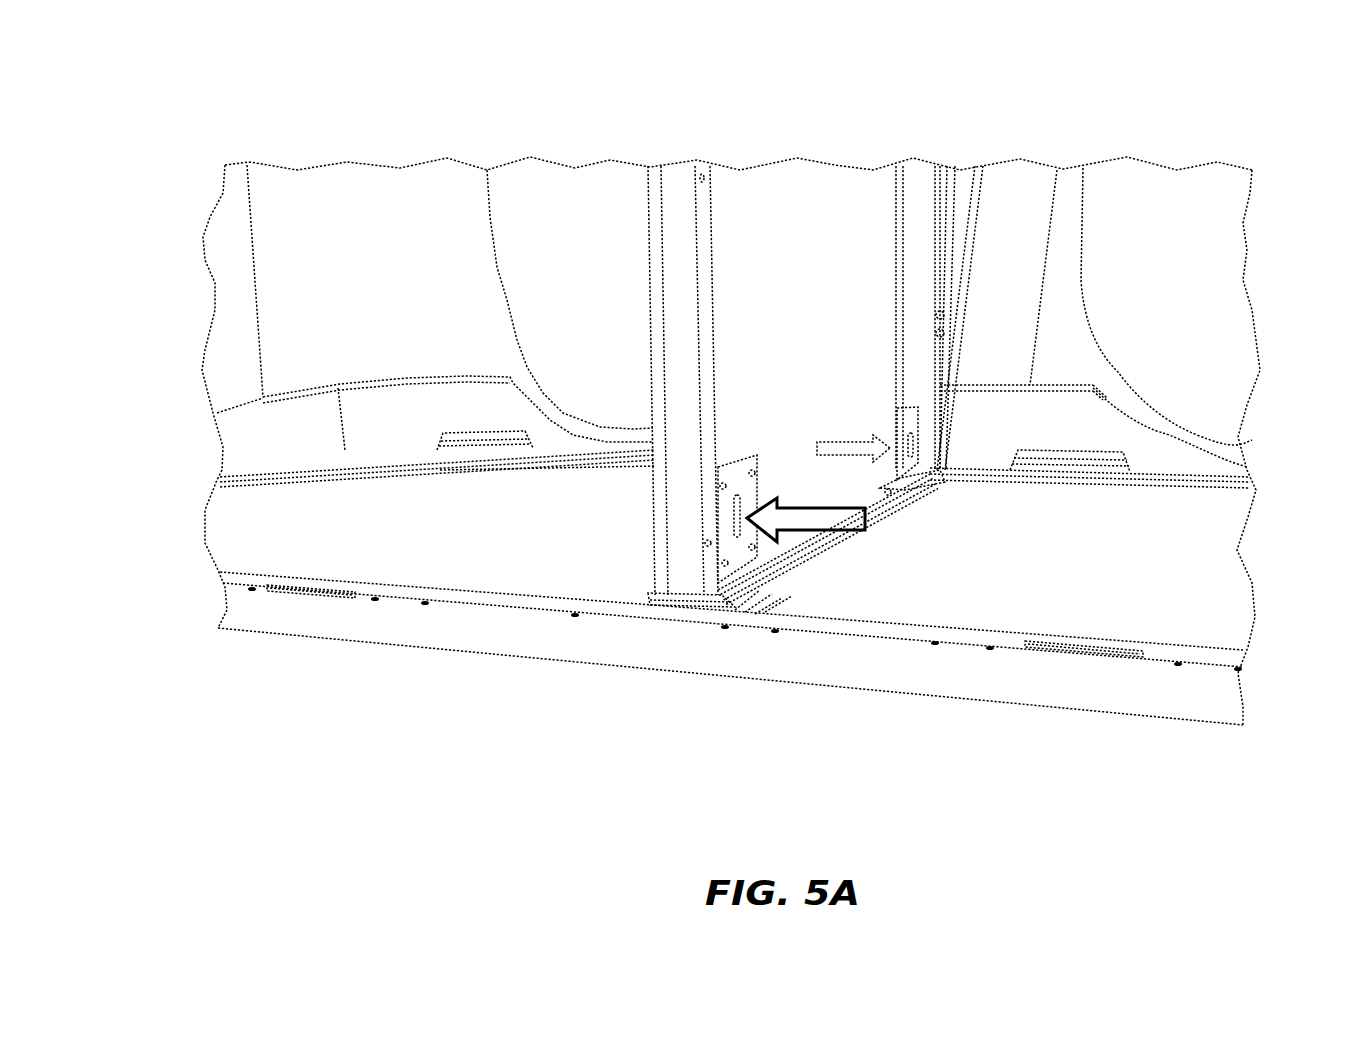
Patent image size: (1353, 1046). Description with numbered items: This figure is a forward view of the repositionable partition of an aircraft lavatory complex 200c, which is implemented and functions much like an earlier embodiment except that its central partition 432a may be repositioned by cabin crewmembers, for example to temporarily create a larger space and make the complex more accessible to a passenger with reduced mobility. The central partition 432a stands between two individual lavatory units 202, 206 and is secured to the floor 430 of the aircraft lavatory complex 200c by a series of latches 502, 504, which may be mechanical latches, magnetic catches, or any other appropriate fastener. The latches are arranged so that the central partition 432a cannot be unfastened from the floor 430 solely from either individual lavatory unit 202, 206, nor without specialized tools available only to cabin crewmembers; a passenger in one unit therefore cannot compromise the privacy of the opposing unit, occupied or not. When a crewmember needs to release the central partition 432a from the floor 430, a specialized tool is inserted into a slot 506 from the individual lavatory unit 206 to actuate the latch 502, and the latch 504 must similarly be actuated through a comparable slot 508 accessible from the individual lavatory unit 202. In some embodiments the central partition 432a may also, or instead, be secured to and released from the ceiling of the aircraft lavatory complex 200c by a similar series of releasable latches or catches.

The aircraft lavatory complex 200c is at (142, 44).
The individual lavatory unit 202 is at (250, 532).
The individual lavatory unit 206 is at (1212, 583).
The floor 430 is at (485, 542).
The central partition 432a is at (682, 218).
The latch 502 is at (740, 585).
The latch 504 is at (912, 483).
The slot 506 is at (737, 527).
The slot 508 is at (912, 423).